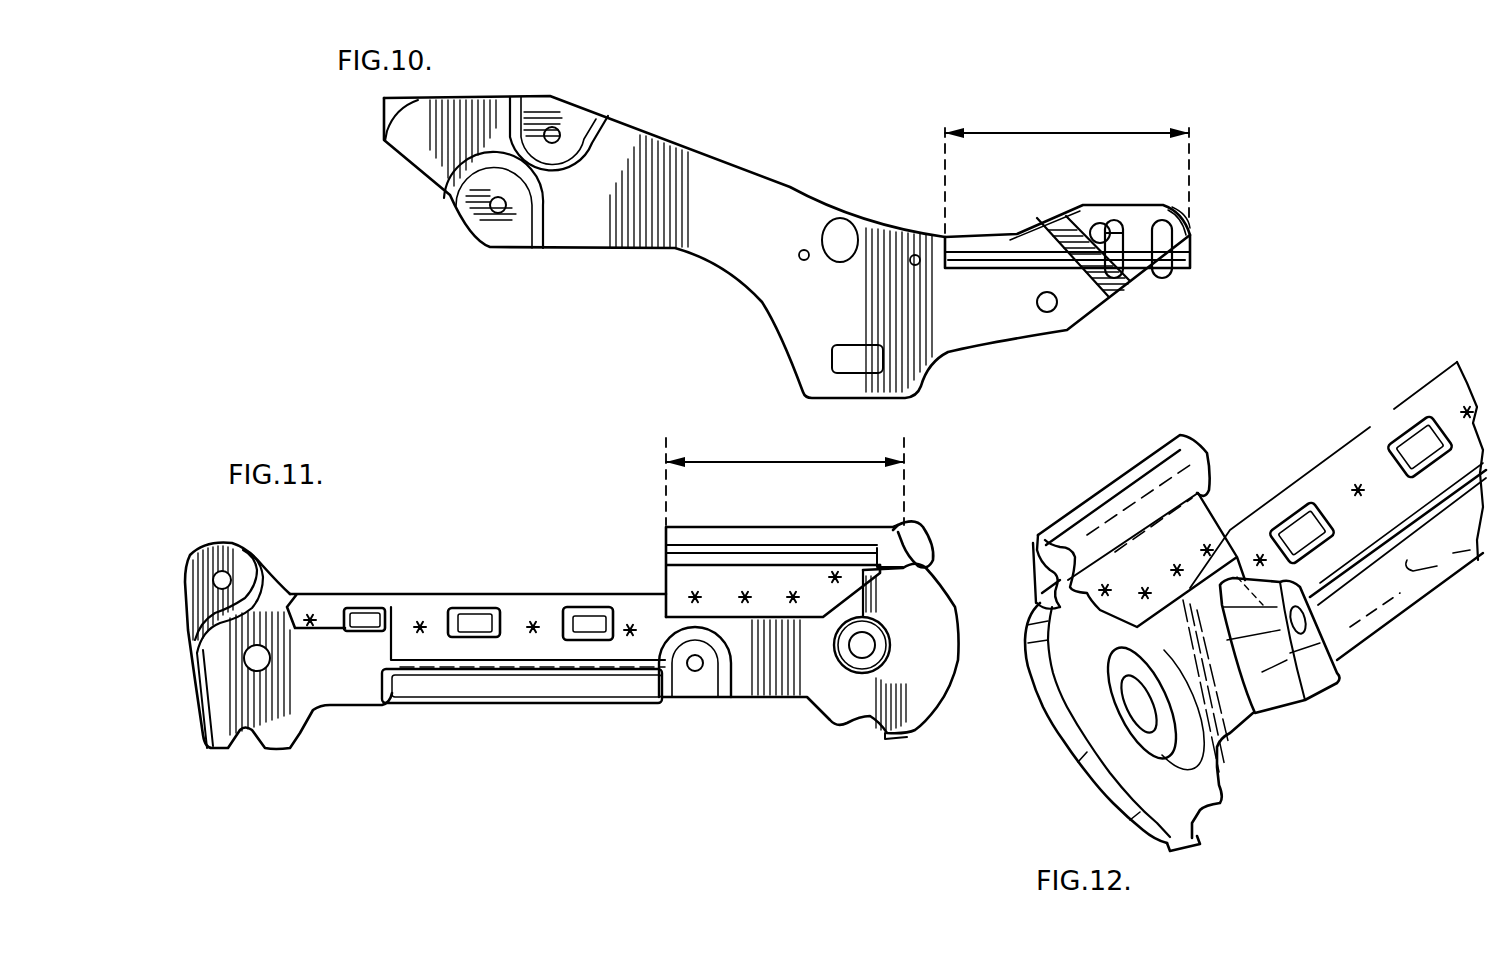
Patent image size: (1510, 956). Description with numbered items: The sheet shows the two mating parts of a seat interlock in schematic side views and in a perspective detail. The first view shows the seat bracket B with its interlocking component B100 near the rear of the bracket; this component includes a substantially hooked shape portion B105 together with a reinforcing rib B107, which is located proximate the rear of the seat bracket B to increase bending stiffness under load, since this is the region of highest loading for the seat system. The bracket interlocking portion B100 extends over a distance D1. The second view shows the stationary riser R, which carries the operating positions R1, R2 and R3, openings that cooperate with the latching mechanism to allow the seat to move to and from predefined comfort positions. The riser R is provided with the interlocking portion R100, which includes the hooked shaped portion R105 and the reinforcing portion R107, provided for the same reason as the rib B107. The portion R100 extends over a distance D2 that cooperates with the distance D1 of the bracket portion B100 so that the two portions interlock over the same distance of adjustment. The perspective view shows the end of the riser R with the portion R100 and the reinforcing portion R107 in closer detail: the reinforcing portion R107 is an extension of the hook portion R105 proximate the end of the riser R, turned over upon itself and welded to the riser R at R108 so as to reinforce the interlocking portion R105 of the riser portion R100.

In FIG. 10, the seat bracket B is at (605, 221).
In FIG. 10, the interlocking component B100 is at (972, 247).
In FIG. 10, the hooked shape portion B105 is at (1008, 260).
In FIG. 10, the reinforcing rib B107 is at (1110, 262).
In FIG. 10, the distance D1 is at (1067, 177).
In FIG. 11, the riser R is at (230, 698).
In FIG. 12, the riser R is at (1088, 695).
In FIG. 11, the operating position opening R1 is at (363, 618).
In FIG. 11, the operating position opening R2 is at (482, 618).
In FIG. 12, the operating position opening R2 is at (1420, 445).
In FIG. 11, the operating position opening R3 is at (592, 622).
In FIG. 12, the operating position opening R3 is at (1302, 527).
In FIG. 11, the interlocking portion R100 is at (707, 540).
In FIG. 12, the interlocking portion R100 is at (1113, 500).
In FIG. 11, the hooked shaped portion R105 is at (806, 556).
In FIG. 11, the reinforcing portion R107 is at (912, 552).
In FIG. 12, the reinforcing portion R107 is at (1043, 571).
In FIG. 12, the weld R108 is at (1053, 606).
In FIG. 11, the distance D2 is at (785, 481).